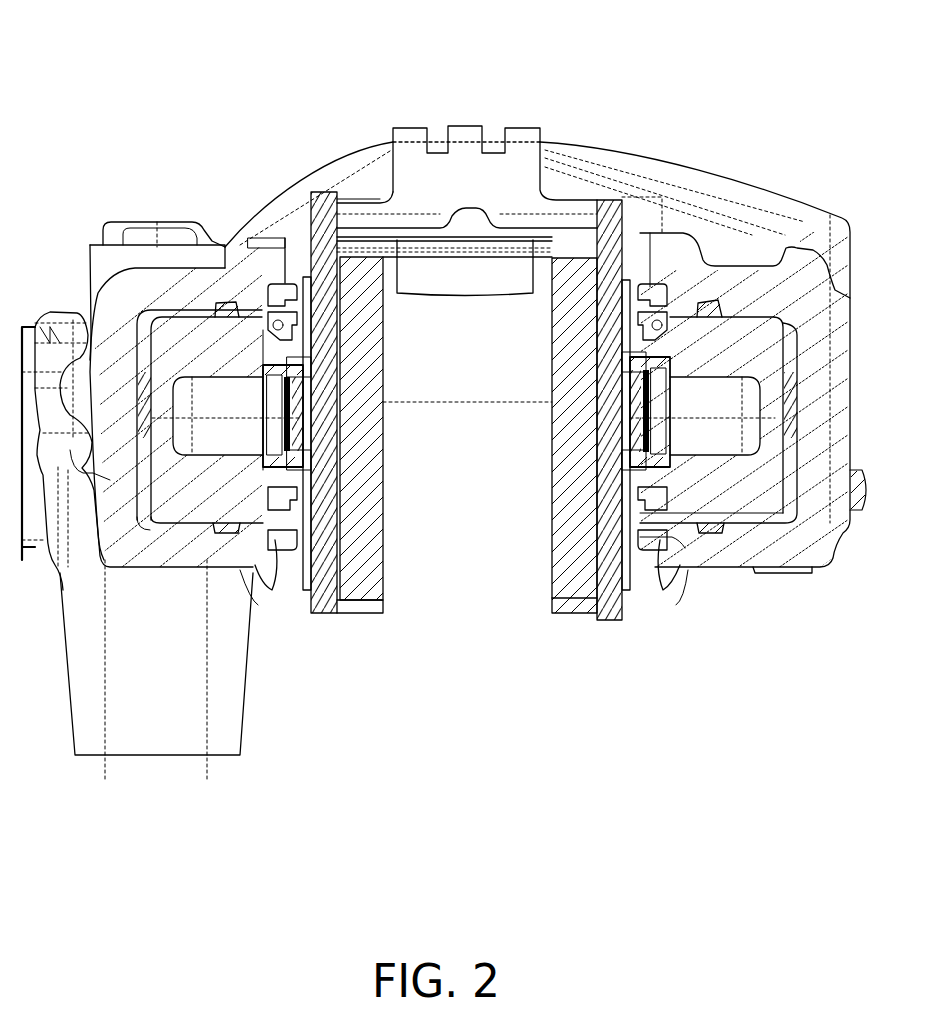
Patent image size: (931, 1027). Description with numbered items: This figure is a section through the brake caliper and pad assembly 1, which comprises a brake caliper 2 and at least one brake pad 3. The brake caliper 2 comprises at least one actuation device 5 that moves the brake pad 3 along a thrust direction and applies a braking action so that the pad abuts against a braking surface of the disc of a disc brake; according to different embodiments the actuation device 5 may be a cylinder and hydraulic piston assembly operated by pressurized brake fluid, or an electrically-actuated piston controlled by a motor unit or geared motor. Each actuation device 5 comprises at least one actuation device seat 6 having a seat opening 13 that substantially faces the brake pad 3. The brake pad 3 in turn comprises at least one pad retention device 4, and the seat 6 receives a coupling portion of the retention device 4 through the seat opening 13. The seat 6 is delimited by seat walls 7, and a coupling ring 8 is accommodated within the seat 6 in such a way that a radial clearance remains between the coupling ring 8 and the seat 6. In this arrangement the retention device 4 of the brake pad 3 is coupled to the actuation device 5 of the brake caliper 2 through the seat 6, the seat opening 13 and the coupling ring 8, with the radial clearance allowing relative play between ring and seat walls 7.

The brake caliper and pad assembly 1 is at (671, 104).
The brake caliper 2 is at (727, 200).
The brake pad 3 is at (363, 572).
The pad retention device 4 is at (302, 452).
The actuation device 5 is at (195, 350).
The actuation device seat 6 is at (258, 572).
The seat walls 7 is at (262, 397).
The coupling ring 8 is at (295, 542).
The seat opening 13 is at (307, 413).